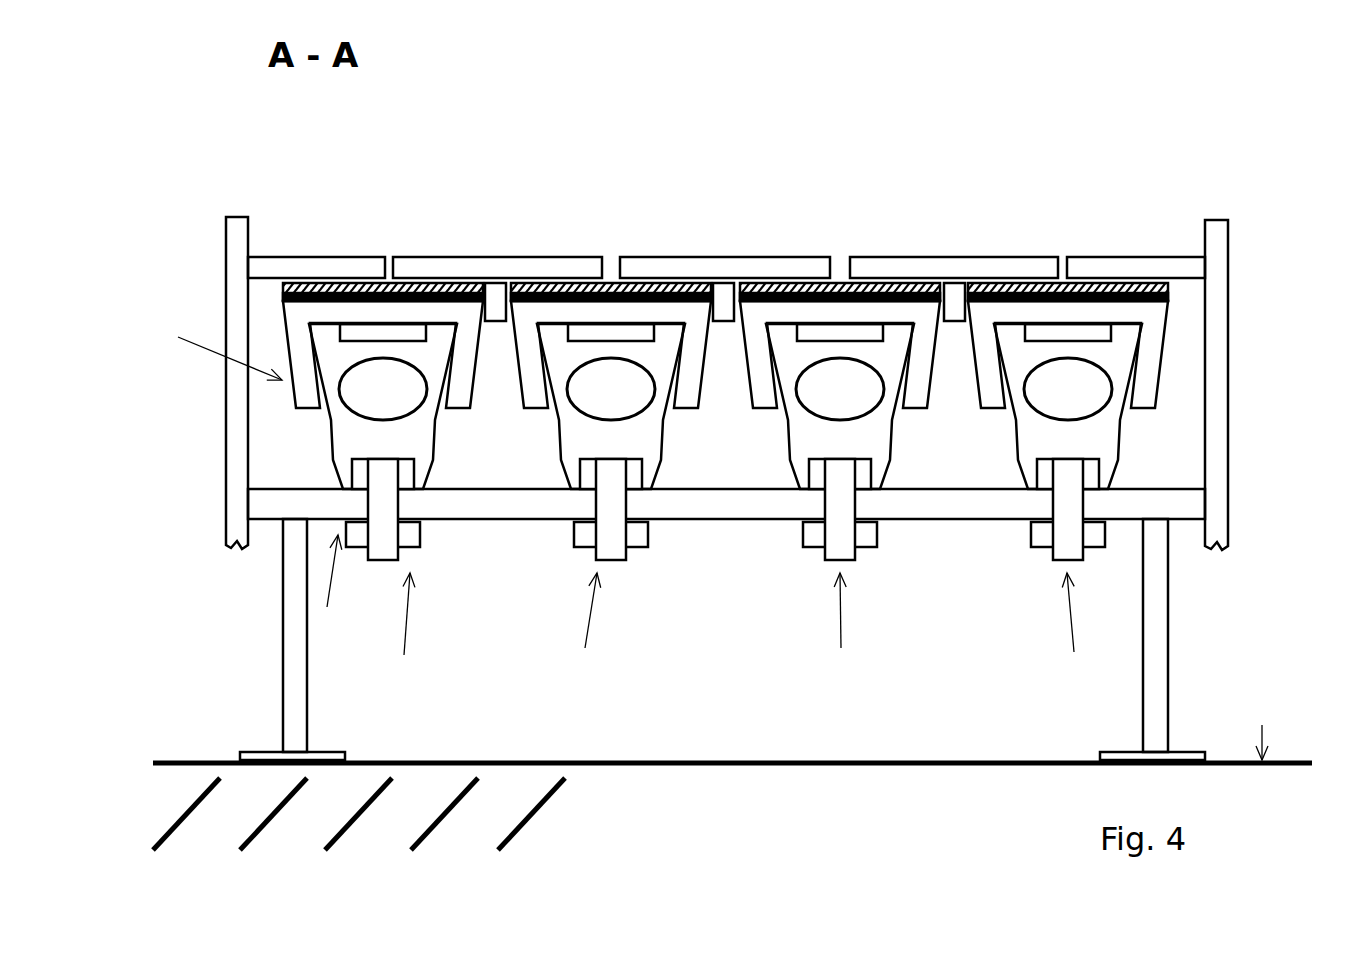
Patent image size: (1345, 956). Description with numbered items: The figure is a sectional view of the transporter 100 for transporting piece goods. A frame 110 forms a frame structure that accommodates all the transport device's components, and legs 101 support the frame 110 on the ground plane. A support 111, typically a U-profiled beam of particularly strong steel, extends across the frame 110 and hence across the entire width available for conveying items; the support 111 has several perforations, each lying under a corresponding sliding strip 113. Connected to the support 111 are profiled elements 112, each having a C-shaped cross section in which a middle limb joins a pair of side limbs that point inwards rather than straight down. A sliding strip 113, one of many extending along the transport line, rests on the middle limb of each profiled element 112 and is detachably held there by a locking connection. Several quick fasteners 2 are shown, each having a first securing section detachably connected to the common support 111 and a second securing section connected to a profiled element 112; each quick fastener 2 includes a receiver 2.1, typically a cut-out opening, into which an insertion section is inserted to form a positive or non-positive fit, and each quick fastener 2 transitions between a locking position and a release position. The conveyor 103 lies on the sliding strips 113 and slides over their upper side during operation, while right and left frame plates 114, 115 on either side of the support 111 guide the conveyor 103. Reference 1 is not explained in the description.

The transporter 100 is at (175, 140).
The frame 110 is at (178, 535).
The support 111 is at (718, 505).
The profiled element 112 is at (1063, 172).
The sliding strip 113 is at (435, 285).
The frame plate 114 is at (238, 392).
The frame plate 115 is at (1217, 413).
The legs 101 is at (292, 648).
The conveyor 103 is at (940, 250).
The mounting unit 1 is at (313, 457).
The quick fastener 2 is at (740, 442).
The receiver 2.1 is at (364, 403).